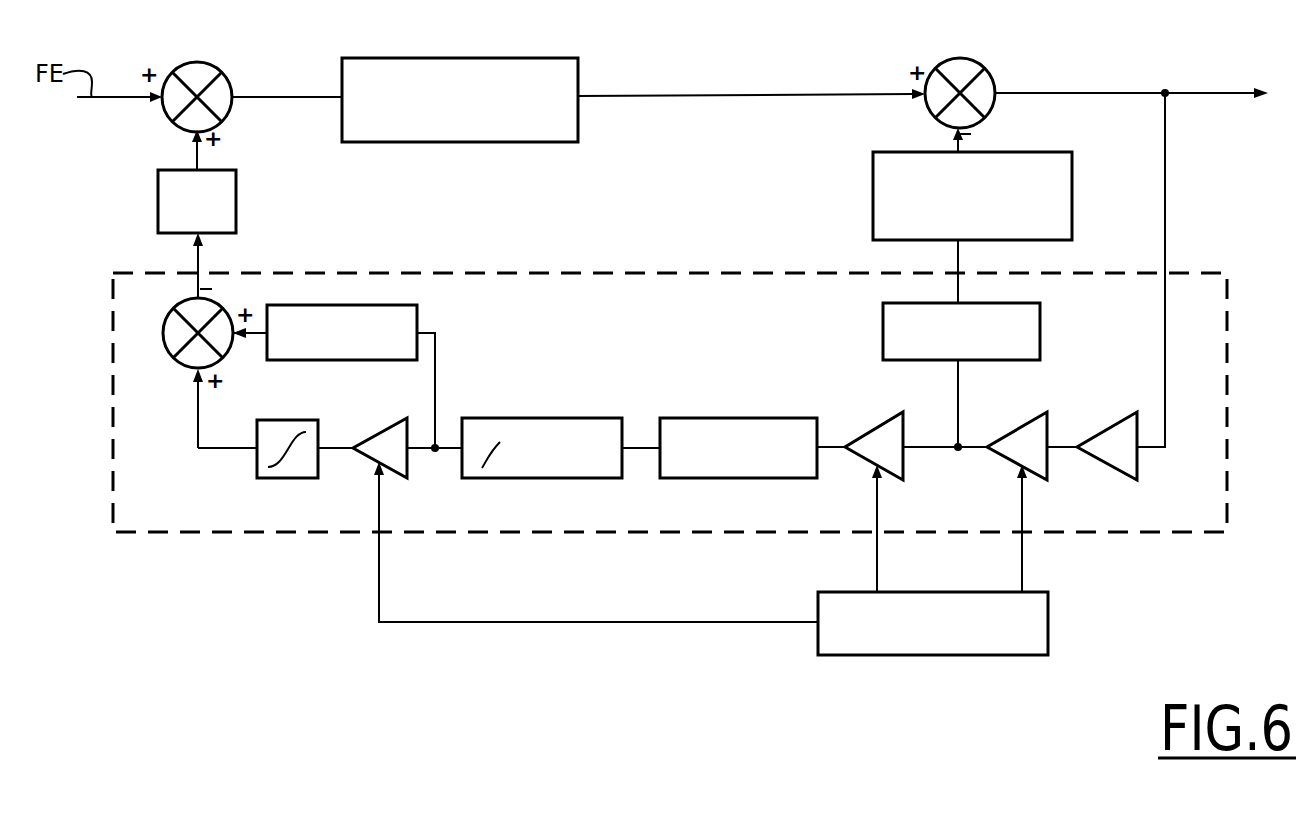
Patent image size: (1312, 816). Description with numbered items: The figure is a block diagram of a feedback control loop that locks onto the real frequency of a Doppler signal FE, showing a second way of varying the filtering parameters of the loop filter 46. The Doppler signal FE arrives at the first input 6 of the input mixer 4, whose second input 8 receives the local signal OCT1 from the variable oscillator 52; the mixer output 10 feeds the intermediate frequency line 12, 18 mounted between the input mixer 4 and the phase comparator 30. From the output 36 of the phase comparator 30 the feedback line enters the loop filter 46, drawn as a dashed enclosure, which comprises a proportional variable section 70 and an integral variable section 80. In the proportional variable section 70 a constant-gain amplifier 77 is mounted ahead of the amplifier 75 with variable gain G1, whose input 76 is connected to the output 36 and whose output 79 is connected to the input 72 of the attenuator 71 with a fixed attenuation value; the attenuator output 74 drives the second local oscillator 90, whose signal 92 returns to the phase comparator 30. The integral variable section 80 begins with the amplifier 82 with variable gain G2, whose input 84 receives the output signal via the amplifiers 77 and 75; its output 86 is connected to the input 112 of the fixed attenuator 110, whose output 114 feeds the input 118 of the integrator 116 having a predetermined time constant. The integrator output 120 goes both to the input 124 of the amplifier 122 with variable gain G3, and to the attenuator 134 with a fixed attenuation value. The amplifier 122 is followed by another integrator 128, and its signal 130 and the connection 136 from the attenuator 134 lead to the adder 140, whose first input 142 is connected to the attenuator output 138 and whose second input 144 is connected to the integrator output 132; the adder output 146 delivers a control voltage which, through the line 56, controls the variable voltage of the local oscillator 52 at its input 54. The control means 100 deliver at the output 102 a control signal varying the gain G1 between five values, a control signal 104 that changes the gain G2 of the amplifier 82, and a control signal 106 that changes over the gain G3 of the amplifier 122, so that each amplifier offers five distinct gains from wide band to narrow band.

The input mixer 4 is at (200, 62).
The first input 6 is at (158, 103).
The second input 8 is at (215, 138).
The output 10 is at (229, 87).
The intermediate frequency line 12 is at (460, 77).
The intermediate frequency line 18 is at (435, 58).
The phase comparator 30 is at (972, 62).
The output 36 is at (999, 86).
The loop filter 46 is at (1228, 362).
The variable oscillator 52 is at (237, 192).
The input 54 is at (201, 241).
The oscillator output line 56 is at (197, 153).
The proportional variable section 70 is at (1050, 358).
The attenuator 71 is at (1010, 288).
The input 72 is at (955, 368).
The output 74 is at (957, 300).
The amplifier 75 is at (1043, 410).
The input 76 is at (1057, 450).
The amplifier 77 is at (1137, 474).
The output 79 is at (990, 443).
The integral variable section 80 is at (500, 370).
The amplifier 82 is at (908, 472).
The input 84 is at (905, 440).
The output 86 is at (846, 452).
The second local oscillator 90 is at (1072, 178).
The oscillator output line 92 is at (965, 243).
The control means 100 is at (980, 656).
The output 102 is at (1023, 561).
The control signal 104 is at (878, 561).
The control signal 106 is at (560, 622).
The attenuator 110 is at (805, 470).
The input 112 is at (832, 445).
The output 114 is at (658, 462).
The integrator 116 is at (500, 480).
The input 118 is at (626, 440).
The output 120 is at (460, 446).
The amplifier 122 is at (378, 472).
The input 124 is at (420, 440).
The integrator 128 is at (285, 420).
The amplifier 130 is at (353, 447).
The output 132 is at (252, 440).
The attenuator 134 is at (372, 305).
The attenuator input line 136 is at (418, 329).
The output 138 is at (266, 322).
The adder 140 is at (175, 305).
The first input 142 is at (234, 333).
The second input 144 is at (200, 368).
The output 146 is at (212, 290).